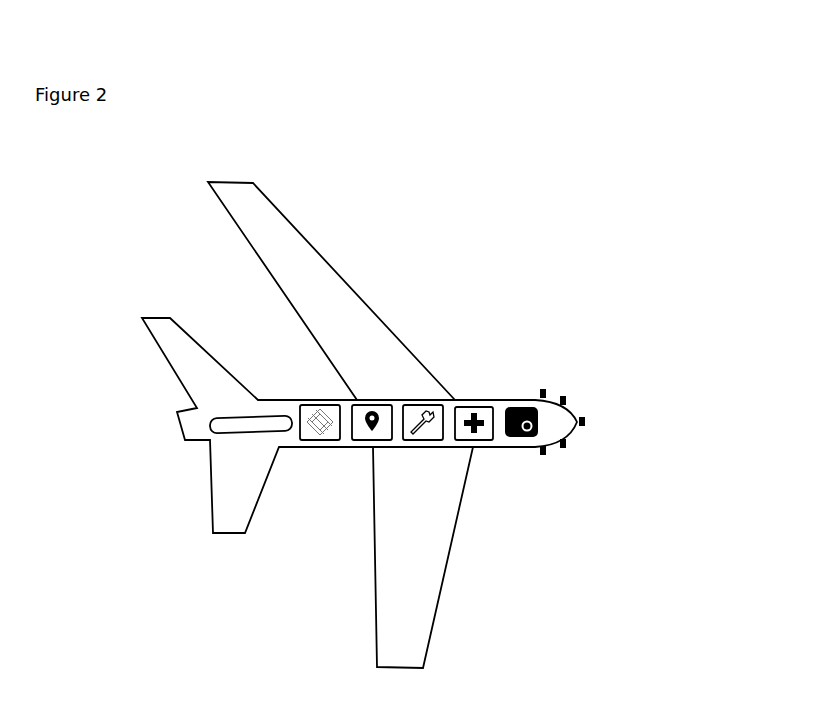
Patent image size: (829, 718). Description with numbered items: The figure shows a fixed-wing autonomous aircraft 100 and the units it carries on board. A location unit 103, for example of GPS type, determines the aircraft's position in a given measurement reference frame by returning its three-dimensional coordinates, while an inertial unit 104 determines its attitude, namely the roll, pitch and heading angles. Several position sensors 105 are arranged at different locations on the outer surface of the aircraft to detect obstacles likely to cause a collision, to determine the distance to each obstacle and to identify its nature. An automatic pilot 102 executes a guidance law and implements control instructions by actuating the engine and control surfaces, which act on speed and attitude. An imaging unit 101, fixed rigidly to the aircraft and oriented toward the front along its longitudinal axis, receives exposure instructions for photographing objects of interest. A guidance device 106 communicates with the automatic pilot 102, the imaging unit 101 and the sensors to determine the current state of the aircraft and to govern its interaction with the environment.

The autonomous aircraft 100 is at (383, 317).
The imaging unit 101 is at (520, 440).
The automatic pilot 102 is at (425, 441).
The location unit 103 is at (372, 440).
The inertial unit 104 is at (327, 406).
The position sensors 105 is at (587, 420).
The guidance device 106 is at (480, 407).